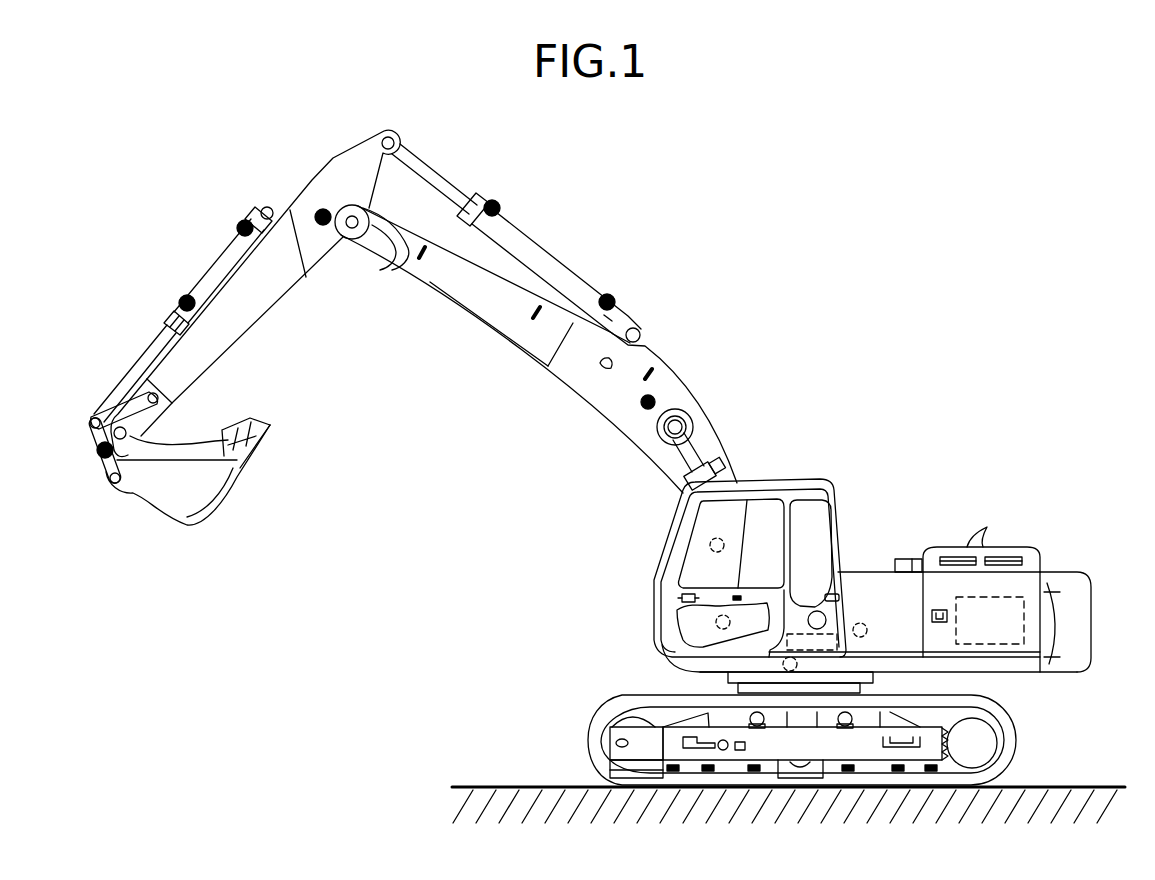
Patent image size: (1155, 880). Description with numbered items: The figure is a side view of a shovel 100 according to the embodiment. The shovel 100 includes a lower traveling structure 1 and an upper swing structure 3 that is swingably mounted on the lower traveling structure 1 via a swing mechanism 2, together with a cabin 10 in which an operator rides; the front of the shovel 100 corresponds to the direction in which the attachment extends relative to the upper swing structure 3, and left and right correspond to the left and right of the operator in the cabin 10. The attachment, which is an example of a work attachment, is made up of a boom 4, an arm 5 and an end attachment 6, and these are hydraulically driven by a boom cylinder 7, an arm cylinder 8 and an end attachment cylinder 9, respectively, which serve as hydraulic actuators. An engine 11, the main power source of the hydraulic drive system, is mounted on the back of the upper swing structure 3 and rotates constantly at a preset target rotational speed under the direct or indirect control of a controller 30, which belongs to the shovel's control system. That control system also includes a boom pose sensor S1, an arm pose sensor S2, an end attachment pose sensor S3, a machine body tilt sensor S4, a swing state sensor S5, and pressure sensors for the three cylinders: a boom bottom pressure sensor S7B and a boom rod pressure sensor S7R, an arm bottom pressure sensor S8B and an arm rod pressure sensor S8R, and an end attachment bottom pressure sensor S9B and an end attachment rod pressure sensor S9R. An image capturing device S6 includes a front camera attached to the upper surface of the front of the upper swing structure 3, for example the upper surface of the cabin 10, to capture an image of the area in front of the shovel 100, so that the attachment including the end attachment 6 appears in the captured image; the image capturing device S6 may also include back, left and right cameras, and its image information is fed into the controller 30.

The shovel 100 is at (958, 300).
The lower traveling structure 1 is at (586, 745).
The swing mechanism 2 is at (870, 685).
The upper swing structure 3 is at (866, 572).
The boom 4 is at (582, 383).
The arm 5 is at (252, 312).
The end attachment 6 is at (165, 498).
The boom cylinder 7 is at (680, 453).
The arm cylinder 8 is at (542, 264).
The end attachment cylinder 9 is at (222, 268).
The cabin 10 is at (815, 481).
The engine 11 is at (1000, 597).
The controller 30 is at (810, 650).
The boom pose sensor S1 is at (655, 397).
The arm pose sensor S2 is at (318, 212).
The end attachment pose sensor S3 is at (100, 456).
The machine body tilt sensor S4 is at (857, 638).
The swing state sensor S5 is at (787, 671).
The image capturing device S6 is at (714, 460).
The boom rod pressure sensor S7R is at (709, 545).
The boom bottom pressure sensor S7B is at (716, 625).
The arm rod pressure sensor S8R is at (498, 204).
The arm bottom pressure sensor S8B is at (612, 297).
The end attachment rod pressure sensor S9R is at (180, 300).
The end attachment bottom pressure sensor S9B is at (238, 226).